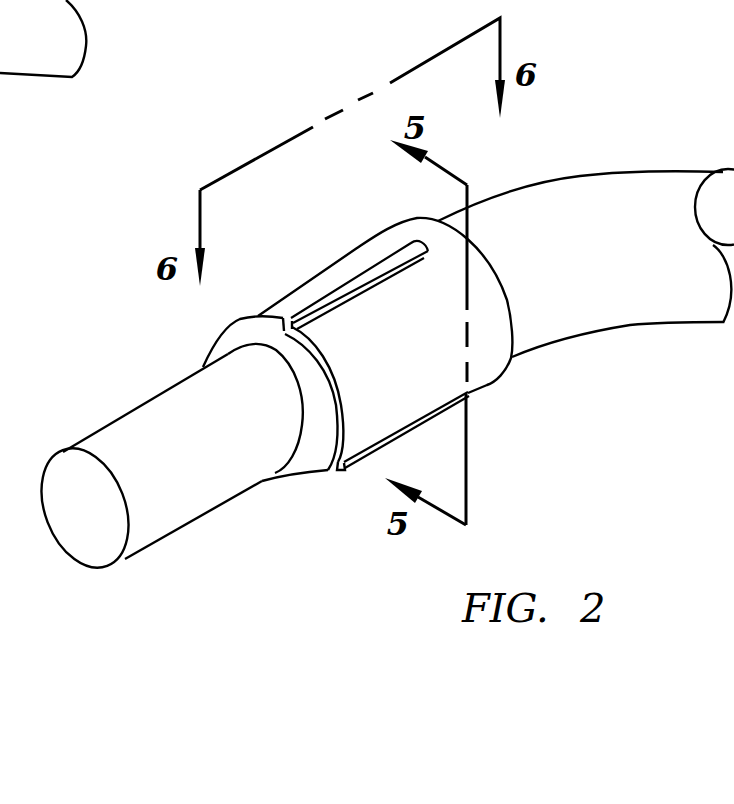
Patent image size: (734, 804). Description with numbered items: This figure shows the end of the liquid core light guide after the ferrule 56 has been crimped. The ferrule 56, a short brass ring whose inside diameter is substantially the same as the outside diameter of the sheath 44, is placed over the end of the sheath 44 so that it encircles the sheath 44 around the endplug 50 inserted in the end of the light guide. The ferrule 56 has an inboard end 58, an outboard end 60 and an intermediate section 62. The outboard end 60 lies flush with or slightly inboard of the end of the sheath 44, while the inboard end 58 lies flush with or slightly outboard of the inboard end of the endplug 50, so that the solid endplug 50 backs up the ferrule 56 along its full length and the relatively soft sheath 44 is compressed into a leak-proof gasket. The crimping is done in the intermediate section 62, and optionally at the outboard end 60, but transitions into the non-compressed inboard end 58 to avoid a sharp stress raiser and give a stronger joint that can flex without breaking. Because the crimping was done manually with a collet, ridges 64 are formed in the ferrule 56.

The sheath 44 is at (216, 344).
The endplug 50 is at (165, 537).
The ferrule 56 is at (434, 349).
The inboard end 58 is at (503, 378).
The outboard end 60 is at (332, 471).
The intermediate section 62 is at (268, 309).
The ridges 64 is at (313, 312).